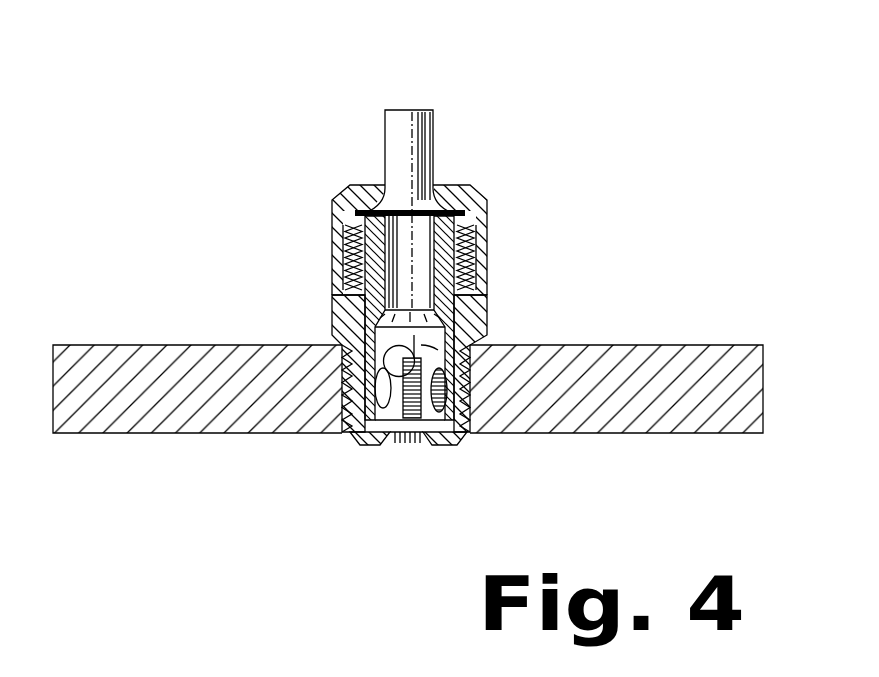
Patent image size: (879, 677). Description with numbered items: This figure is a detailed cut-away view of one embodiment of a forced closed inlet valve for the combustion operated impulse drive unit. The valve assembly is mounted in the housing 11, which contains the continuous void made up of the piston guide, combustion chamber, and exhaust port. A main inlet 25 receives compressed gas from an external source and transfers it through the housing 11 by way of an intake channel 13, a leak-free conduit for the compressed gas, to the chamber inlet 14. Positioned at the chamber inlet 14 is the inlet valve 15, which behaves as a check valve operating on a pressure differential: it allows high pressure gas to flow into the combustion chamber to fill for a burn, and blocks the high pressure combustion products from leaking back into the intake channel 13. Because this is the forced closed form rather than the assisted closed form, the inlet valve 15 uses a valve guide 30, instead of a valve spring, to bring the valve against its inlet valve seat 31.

The housing 11 is at (626, 334).
The intake channel 13 is at (400, 168).
The chamber inlet 14 is at (410, 433).
The inlet valve 15 is at (398, 433).
The main inlet 25 is at (403, 108).
The valve guide 30 is at (450, 336).
The inlet valve seat 31 is at (345, 282).